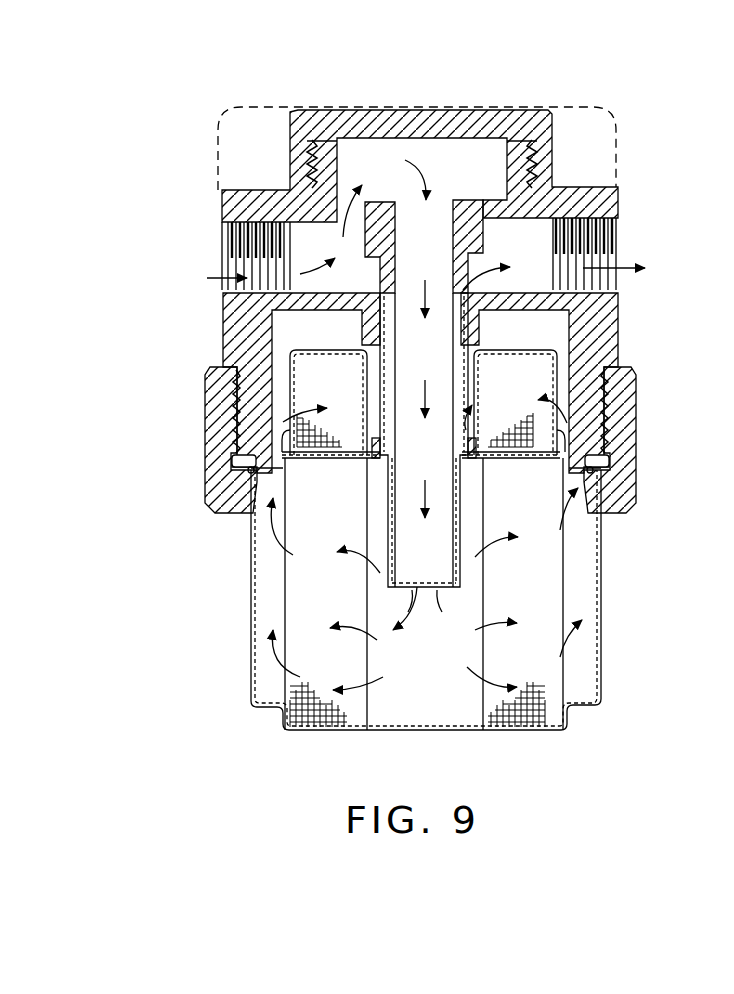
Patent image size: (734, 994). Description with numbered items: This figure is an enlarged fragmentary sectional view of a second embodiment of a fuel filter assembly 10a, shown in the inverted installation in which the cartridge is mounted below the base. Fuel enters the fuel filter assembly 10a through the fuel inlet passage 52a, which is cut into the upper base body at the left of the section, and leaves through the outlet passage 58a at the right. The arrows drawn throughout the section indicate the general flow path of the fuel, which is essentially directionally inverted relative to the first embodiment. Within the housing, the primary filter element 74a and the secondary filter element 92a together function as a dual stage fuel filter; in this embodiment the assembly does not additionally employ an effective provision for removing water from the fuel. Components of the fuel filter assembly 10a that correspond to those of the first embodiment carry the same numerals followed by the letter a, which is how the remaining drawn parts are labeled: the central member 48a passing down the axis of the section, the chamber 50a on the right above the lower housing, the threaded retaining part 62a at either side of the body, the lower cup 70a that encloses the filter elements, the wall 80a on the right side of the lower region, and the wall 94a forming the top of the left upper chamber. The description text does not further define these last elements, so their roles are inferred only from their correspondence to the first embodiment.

The fuel filter assembly 10a is at (340, 90).
The central tube 48a is at (458, 573).
The right upper chamber cup 50a is at (474, 398).
The fuel inlet passage 52a is at (245, 293).
The outlet passage 58a is at (597, 290).
The retaining nut 62a is at (617, 485).
The cup housing 70a is at (601, 582).
The primary filter element 74a is at (345, 518).
The right lower chamber 80a is at (530, 446).
The secondary filter element 92a is at (355, 387).
The chamber wall 94a is at (344, 350).